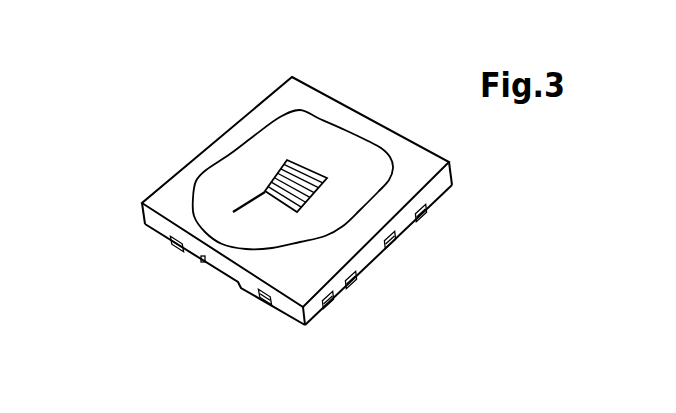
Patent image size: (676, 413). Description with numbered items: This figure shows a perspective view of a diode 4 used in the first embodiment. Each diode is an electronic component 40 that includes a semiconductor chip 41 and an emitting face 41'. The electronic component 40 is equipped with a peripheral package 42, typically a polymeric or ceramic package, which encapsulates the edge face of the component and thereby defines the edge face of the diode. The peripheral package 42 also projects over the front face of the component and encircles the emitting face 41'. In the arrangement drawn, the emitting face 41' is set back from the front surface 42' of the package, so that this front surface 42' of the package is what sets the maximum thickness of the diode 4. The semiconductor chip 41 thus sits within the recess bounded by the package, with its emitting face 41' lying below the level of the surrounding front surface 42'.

The diode 4 is at (122, 270).
The electronic component 40 is at (302, 123).
The semiconductor chip 41 is at (255, 139).
The emitting face 41' is at (325, 136).
The peripheral package 42 is at (340, 243).
The front surface 42' is at (275, 192).